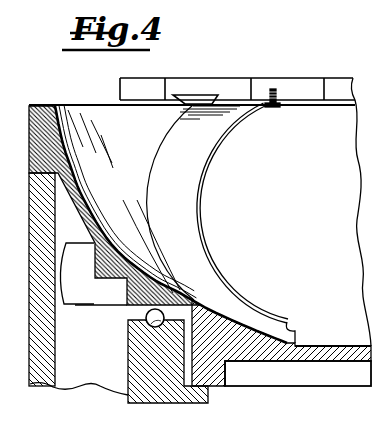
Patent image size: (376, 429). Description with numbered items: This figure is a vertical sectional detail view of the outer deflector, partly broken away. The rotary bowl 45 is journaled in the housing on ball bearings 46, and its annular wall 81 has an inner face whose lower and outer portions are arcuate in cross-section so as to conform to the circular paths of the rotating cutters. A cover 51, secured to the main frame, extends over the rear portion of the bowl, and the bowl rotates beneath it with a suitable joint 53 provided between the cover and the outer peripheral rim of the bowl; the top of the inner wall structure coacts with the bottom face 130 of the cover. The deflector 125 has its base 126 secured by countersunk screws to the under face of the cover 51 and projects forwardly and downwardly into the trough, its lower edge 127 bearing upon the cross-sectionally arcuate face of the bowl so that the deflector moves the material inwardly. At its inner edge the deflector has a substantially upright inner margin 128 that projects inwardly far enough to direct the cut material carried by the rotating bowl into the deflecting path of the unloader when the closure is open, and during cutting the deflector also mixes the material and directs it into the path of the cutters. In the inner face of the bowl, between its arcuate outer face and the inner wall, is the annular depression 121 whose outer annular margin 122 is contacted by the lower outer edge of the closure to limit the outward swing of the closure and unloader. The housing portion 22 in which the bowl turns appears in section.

The support wall / housing 22 is at (30, 385).
The rotary bowl 45 is at (56, 106).
The ball bearings 46 is at (145, 311).
The cover 51 is at (276, 80).
The joint 53 is at (194, 95).
The annular wall 81 is at (80, 206).
The annular depression 121 is at (320, 368).
The outer annular margin 122 is at (303, 345).
The deflector 125 is at (193, 178).
The base 126 is at (275, 108).
The lower edge 127 is at (170, 275).
The inner margin 128 is at (288, 322).
The bottom face 130 is at (331, 100).